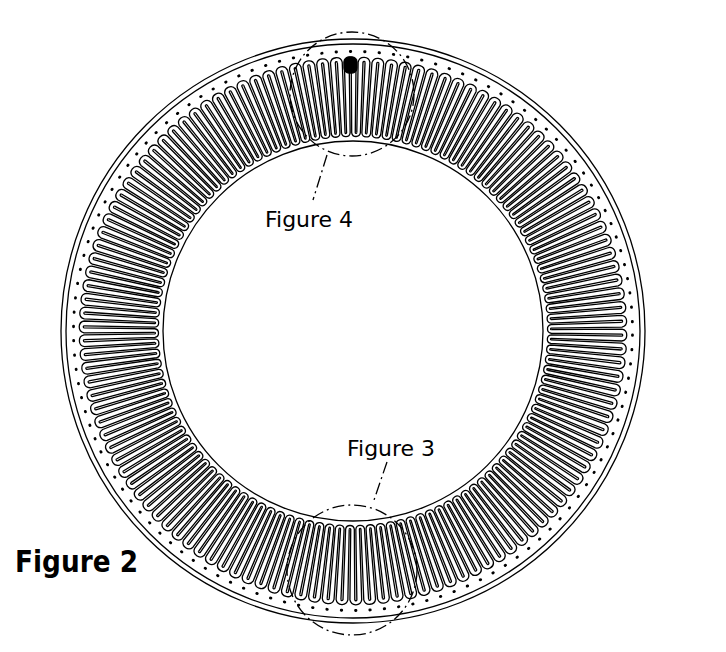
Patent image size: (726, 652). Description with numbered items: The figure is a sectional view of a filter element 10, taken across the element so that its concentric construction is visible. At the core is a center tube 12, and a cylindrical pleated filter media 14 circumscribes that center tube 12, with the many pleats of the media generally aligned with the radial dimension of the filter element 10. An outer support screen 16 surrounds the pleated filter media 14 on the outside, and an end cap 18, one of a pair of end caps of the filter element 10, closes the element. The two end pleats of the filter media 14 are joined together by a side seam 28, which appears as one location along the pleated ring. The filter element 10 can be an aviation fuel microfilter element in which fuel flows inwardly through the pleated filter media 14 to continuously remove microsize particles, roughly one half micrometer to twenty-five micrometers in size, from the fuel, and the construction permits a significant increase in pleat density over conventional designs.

The filter element 10 is at (527, 58).
The center tube 12 is at (505, 100).
The cylindrical pleated filter media 14 is at (547, 192).
The outer support screen 16 is at (618, 250).
The end cap 18 is at (365, 345).
The side seam 28 is at (355, 62).